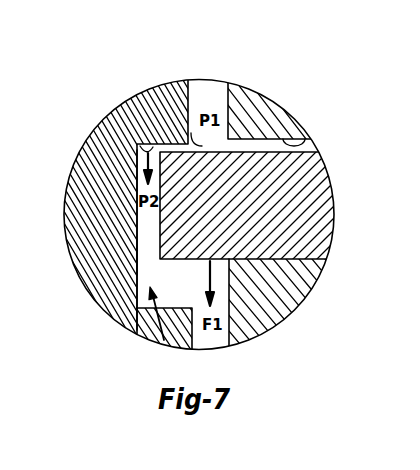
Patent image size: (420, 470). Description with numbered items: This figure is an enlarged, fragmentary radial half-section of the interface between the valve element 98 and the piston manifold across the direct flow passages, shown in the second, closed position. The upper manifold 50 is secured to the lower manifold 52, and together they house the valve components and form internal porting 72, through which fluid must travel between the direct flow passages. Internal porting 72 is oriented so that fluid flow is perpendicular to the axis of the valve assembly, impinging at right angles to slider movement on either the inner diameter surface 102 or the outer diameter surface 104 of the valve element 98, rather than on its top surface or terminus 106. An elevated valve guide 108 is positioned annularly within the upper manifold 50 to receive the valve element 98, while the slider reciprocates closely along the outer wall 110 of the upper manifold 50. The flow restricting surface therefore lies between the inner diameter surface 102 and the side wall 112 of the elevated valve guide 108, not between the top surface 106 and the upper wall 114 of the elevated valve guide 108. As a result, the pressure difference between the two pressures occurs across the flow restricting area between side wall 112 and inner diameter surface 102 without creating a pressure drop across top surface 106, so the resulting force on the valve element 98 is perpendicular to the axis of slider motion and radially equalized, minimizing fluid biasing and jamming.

The upper manifold 50 is at (162, 92).
The lower manifold 52 is at (303, 286).
The internal porting 72 is at (212, 84).
The valve element 98 is at (245, 240).
The inner diameter surface 102 is at (210, 146).
The outer diameter surface 104 is at (175, 310).
The top surface (terminus) 106 is at (140, 234).
The elevated valve guide 108 is at (158, 344).
The outer wall 110 is at (306, 139).
The side wall 112 is at (137, 145).
The upper wall 114 is at (142, 262).